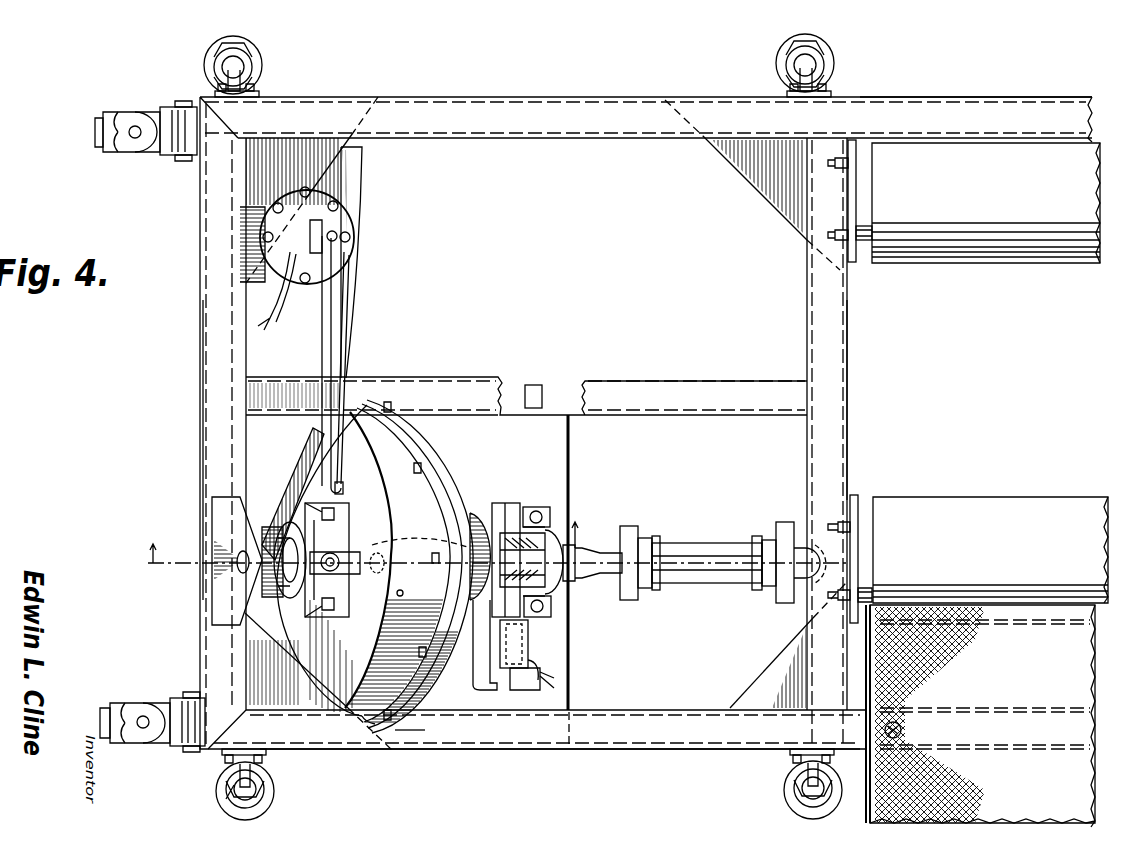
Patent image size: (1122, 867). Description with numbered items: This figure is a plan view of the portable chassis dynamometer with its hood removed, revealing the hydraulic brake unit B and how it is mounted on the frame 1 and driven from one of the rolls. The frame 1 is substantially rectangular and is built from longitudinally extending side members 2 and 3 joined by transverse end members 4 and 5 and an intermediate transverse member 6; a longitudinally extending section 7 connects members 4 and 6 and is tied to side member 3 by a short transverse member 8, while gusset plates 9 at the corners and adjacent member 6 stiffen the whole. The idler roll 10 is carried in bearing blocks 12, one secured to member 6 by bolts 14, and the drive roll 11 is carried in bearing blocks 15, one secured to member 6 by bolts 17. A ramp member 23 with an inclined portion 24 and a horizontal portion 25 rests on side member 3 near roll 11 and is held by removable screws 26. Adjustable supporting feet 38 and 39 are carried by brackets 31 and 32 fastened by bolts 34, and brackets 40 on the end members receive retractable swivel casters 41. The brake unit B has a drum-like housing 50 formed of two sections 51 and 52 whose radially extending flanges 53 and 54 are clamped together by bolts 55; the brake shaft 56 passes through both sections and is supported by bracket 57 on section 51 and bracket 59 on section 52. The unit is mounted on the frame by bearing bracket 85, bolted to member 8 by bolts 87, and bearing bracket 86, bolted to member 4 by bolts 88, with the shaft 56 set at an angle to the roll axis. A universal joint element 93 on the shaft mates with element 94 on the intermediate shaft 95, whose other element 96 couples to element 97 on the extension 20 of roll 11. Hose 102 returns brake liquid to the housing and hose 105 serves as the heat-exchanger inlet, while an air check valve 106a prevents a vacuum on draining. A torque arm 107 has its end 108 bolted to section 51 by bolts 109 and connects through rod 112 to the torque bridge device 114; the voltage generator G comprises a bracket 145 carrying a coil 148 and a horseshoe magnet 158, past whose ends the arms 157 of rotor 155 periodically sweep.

The dynamometer frame 1 is at (401, 91).
The side member 2 is at (1010, 97).
The side member 3 is at (487, 750).
The transverse end member 4 is at (202, 372).
The intermediate transverse member 6 is at (848, 355).
The longitudinally extending section 7 is at (452, 378).
The short transverse member 8 is at (571, 470).
The gusset plate 9 is at (782, 214).
The dynamometer roll 10 is at (1050, 256).
The dynamometer roll 11 is at (1074, 508).
The bearing block 12 is at (856, 146).
The bolt 14 is at (854, 260).
The bearing block 15 is at (854, 496).
The bolt 17 is at (858, 522).
The extension of the drive roll 20 is at (872, 546).
The ramp member 23 is at (866, 812).
The inclined portion 24 is at (1082, 816).
The horizontal portion 25 is at (1084, 680).
The removable screw 26 is at (902, 730).
The bracket 31 is at (260, 92).
The bracket 32 is at (832, 92).
The bolt 34 is at (218, 92).
The adjustable supporting foot 38 is at (830, 56).
The adjustable supporting foot 39 is at (250, 56).
The bracket 40 is at (163, 106).
The caster 41 is at (104, 120).
The drum-like casing or housing 50 is at (458, 480).
The housing section 51 is at (366, 716).
The housing section 52 is at (412, 728).
The radially extending flange 53 is at (398, 396).
The radially extending flange 54 is at (418, 396).
The bolt 55 is at (424, 646).
The brake shaft 56 is at (238, 560).
The bracket 57 is at (322, 614).
The bracket 59 is at (440, 530).
The bearing bracket 85 is at (548, 590).
The bearing bracket 86 is at (214, 504).
The bolt 87 is at (538, 512).
The bolt 88 is at (216, 526).
The universal joint element 93 is at (580, 548).
The universal joint element 94 is at (630, 525).
The intermediate shaft 95 is at (716, 584).
The universal joint element 96 is at (784, 522).
The universal joint element 97 is at (792, 600).
The hose 102 is at (358, 302).
The hose 105 is at (551, 394).
The air check valve 106a is at (334, 556).
The torque arm 107 is at (322, 352).
The end of the torque arm 108 is at (343, 486).
The bolt 109 is at (336, 452).
The rod 112 is at (302, 206).
The torque bridge device 114 is at (255, 199).
The bracket 145 is at (478, 680).
The coil 148 is at (527, 636).
The rotor 155 is at (484, 515).
The arm 157 is at (512, 506).
The horseshoe magnet 158 is at (524, 622).
The brake unit B is at (449, 451).
The voltage generator G is at (542, 665).
The transverse end member 5 is at (497, 532).